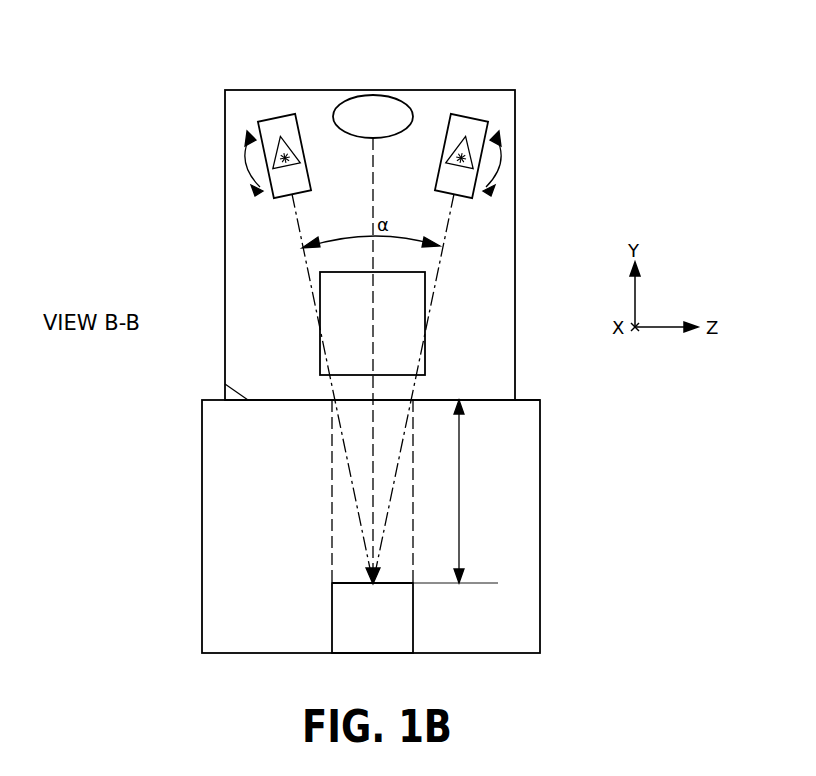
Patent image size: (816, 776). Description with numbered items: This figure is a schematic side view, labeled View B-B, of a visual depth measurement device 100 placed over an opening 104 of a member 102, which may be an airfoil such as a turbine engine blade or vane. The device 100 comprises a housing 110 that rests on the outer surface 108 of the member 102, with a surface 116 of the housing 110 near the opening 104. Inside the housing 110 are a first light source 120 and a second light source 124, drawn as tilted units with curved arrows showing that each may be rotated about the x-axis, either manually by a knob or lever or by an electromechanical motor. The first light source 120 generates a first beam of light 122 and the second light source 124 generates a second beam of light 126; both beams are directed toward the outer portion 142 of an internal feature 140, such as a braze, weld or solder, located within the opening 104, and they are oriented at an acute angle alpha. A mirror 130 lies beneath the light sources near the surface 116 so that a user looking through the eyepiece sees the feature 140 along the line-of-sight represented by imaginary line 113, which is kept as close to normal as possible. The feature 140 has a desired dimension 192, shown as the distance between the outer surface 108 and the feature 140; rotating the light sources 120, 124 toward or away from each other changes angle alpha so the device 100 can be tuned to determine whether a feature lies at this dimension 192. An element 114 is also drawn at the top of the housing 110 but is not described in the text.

The visual depth measurement device 100 is at (538, 106).
The member 102 is at (371, 526).
The opening 104 is at (333, 452).
The outer surface 108 is at (526, 400).
The housing 110 is at (225, 99).
The imaginary line 113 is at (373, 170).
The camera 114 is at (383, 95).
The surface 116 is at (225, 393).
The first light source 120 is at (281, 197).
The first beam of light 122 is at (313, 236).
The second light source 124 is at (460, 198).
The second beam of light 126 is at (440, 236).
The mirror 130 is at (425, 366).
The internal feature 140 is at (372, 618).
The outer portion 142 is at (397, 583).
The desired dimension 192 is at (459, 492).